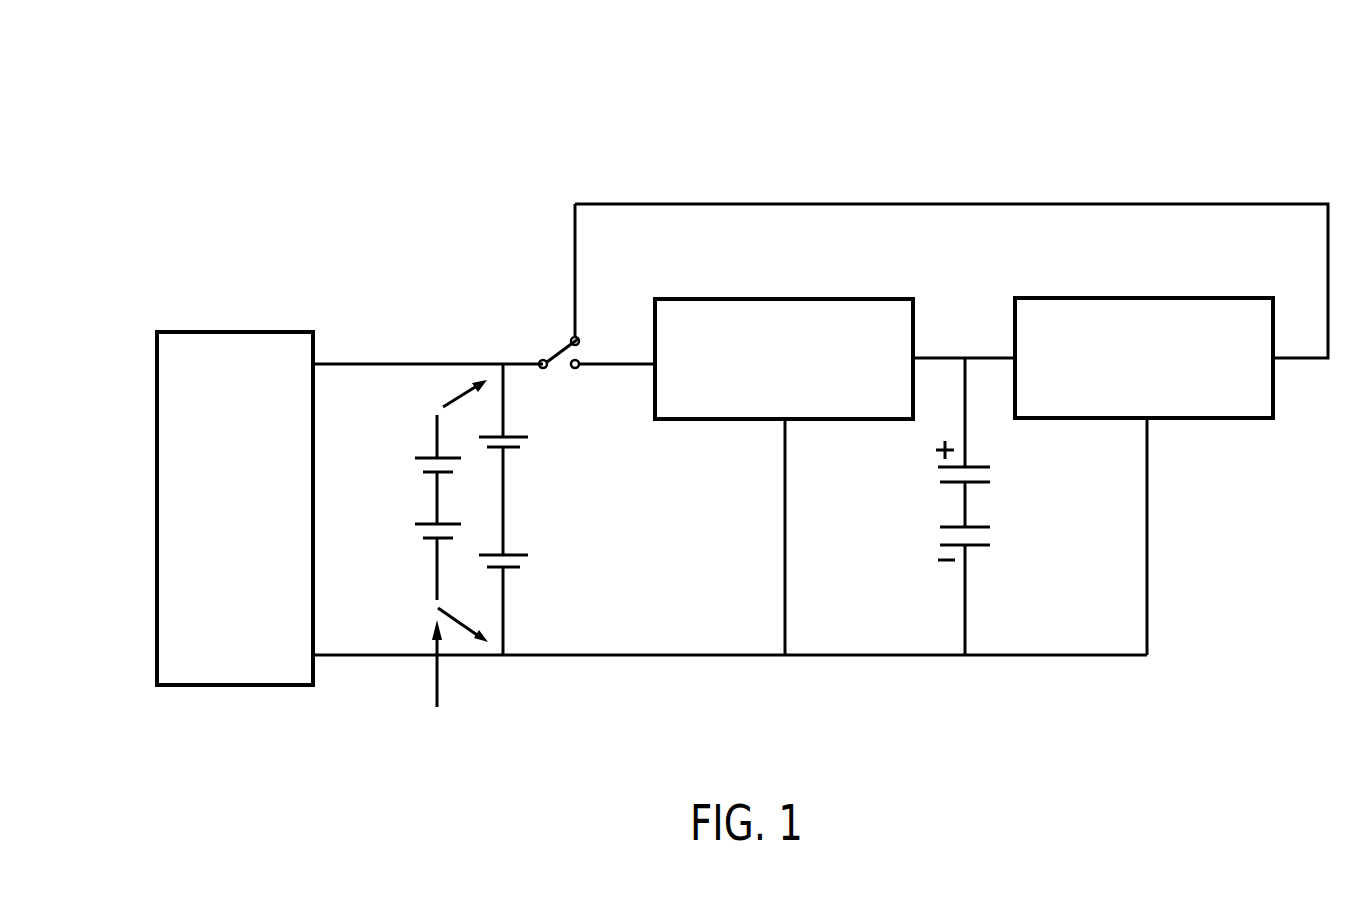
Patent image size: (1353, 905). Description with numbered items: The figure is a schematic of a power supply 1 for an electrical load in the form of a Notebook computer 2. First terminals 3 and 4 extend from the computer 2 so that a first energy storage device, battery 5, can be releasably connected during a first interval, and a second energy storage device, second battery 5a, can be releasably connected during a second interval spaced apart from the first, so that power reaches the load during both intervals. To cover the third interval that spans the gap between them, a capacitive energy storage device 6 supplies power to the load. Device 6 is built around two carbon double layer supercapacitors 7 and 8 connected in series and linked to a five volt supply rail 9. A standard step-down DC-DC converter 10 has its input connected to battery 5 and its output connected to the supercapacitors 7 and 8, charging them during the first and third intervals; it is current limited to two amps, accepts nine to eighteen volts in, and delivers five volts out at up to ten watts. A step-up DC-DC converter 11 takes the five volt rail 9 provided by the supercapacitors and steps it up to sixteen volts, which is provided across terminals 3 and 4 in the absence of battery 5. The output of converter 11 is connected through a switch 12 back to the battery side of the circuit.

The power supply 1 is at (776, 94).
The Notebook computer 2 is at (237, 332).
The first terminal 3 is at (387, 364).
The first terminal 4 is at (603, 655).
The battery 5 is at (618, 505).
The second battery 5a is at (437, 677).
The capacitive energy storage device 6 is at (947, 572).
The supercapacitor 7 is at (970, 472).
The supercapacitor 8 is at (967, 535).
The supply rail 9 is at (930, 357).
The step-down DC-DC converter 10 is at (787, 299).
The step-up DC-DC converter 11 is at (1147, 298).
The switch 12 is at (573, 336).